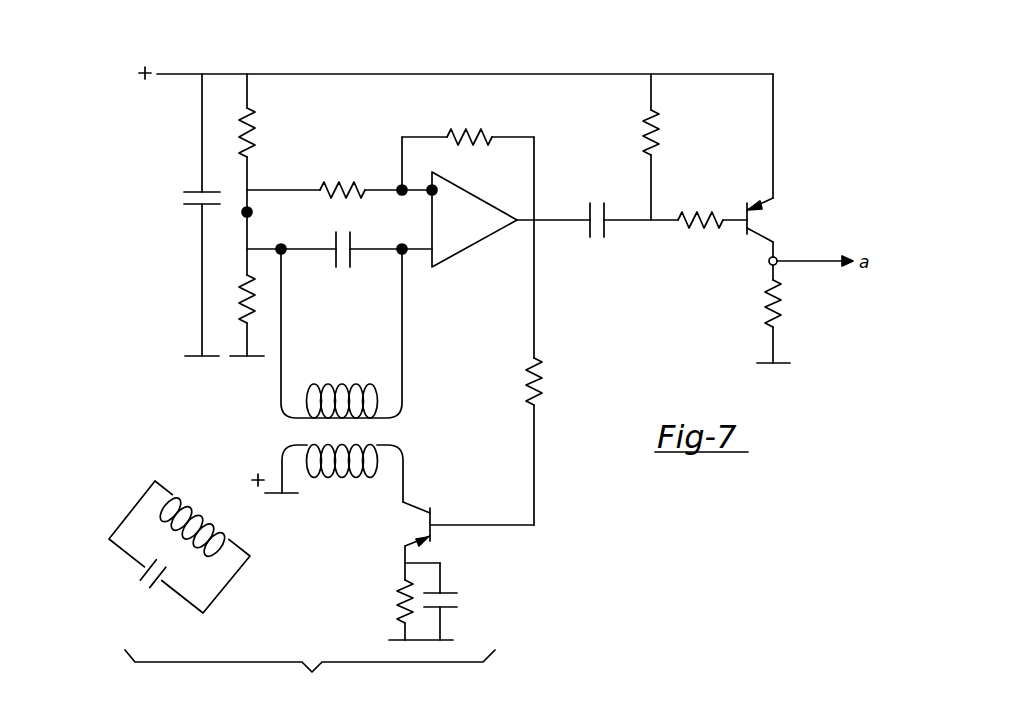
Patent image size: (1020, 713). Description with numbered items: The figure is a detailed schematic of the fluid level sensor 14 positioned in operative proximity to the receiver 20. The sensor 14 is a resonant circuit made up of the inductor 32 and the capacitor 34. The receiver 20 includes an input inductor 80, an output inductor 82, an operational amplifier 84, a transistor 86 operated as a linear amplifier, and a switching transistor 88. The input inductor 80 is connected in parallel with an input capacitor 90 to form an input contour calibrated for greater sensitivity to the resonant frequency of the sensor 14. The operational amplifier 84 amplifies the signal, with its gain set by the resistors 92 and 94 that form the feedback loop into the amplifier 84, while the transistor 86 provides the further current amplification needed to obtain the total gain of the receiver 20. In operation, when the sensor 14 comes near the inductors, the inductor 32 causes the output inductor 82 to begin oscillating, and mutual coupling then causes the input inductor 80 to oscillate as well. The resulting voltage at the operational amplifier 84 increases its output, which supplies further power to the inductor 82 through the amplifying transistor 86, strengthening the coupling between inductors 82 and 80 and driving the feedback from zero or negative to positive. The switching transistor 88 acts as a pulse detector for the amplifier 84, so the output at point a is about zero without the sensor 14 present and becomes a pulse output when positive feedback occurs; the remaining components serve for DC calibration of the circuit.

The level sensor 14 is at (148, 548).
The receiver 20 is at (770, 67).
The inductor 32 is at (183, 502).
The capacitor 34 is at (152, 592).
The input inductor 80 is at (370, 386).
The output inductor 82 is at (370, 478).
The operational amplifier 84 is at (475, 214).
The transistor 86 is at (451, 533).
The switching transistor 88 is at (751, 246).
The input capacitor 90 is at (332, 257).
The resistor 92 is at (343, 185).
The resistor 94 is at (470, 131).